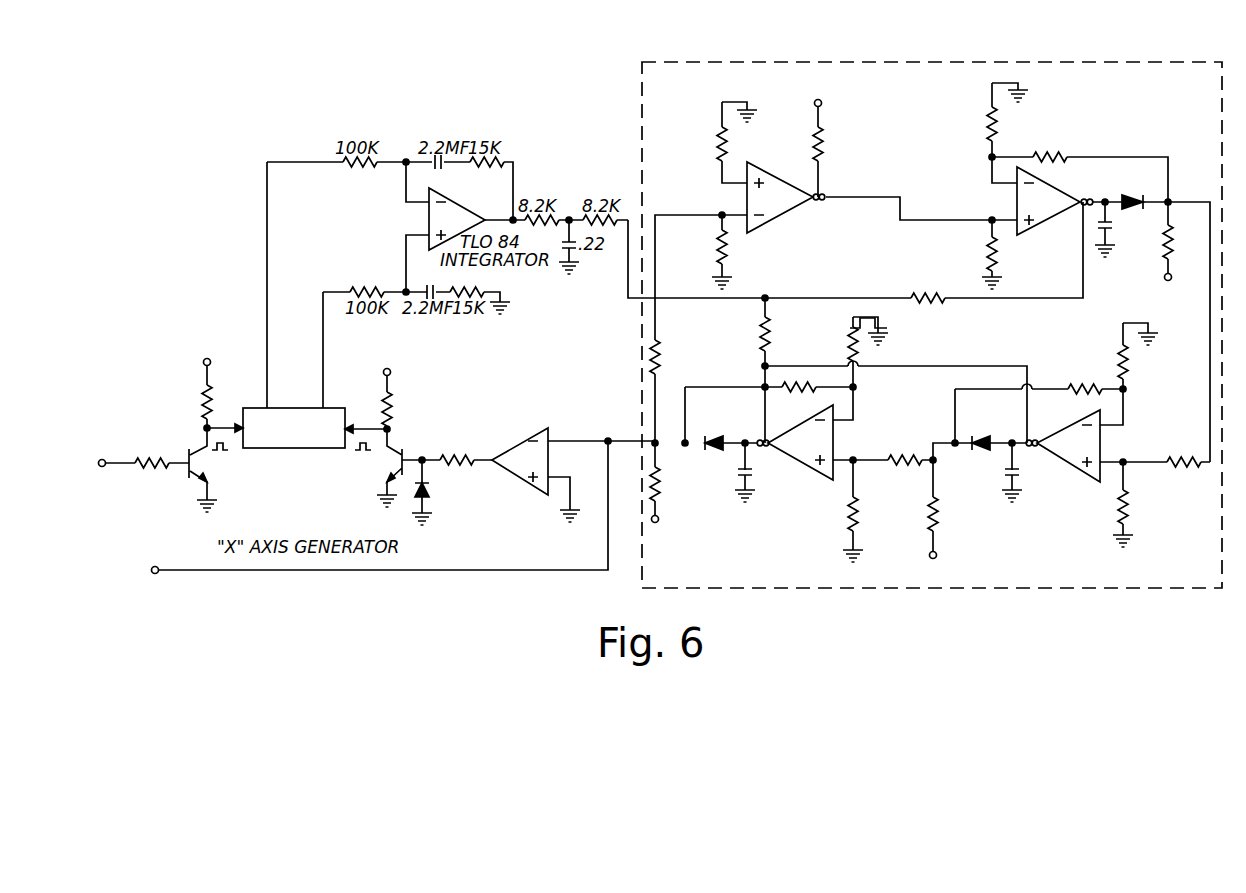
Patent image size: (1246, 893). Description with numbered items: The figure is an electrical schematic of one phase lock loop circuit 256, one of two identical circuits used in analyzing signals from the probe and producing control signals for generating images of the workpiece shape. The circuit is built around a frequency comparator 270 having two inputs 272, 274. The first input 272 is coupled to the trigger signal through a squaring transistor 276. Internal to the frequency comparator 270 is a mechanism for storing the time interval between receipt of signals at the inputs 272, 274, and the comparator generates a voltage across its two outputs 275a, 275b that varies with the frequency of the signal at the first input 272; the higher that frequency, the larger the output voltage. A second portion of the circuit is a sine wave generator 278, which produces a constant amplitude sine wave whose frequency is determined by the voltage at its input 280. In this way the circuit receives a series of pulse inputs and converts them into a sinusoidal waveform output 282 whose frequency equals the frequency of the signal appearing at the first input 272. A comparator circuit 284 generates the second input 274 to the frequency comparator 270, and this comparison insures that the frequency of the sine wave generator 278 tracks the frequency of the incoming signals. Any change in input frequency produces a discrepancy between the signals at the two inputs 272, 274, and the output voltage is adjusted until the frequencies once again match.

The phase lock loop circuit 256 is at (626, 117).
The frequency comparator 270 is at (290, 408).
The first input 272 is at (217, 427).
The second input 274 is at (367, 427).
The output 275a is at (267, 228).
The output 275b is at (340, 292).
The squaring transistor 276 is at (193, 474).
The sine wave generator 278 is at (858, 589).
The input 280 is at (628, 283).
The sinusoidal waveform output 282 is at (363, 573).
The comparator circuit 284 is at (525, 450).